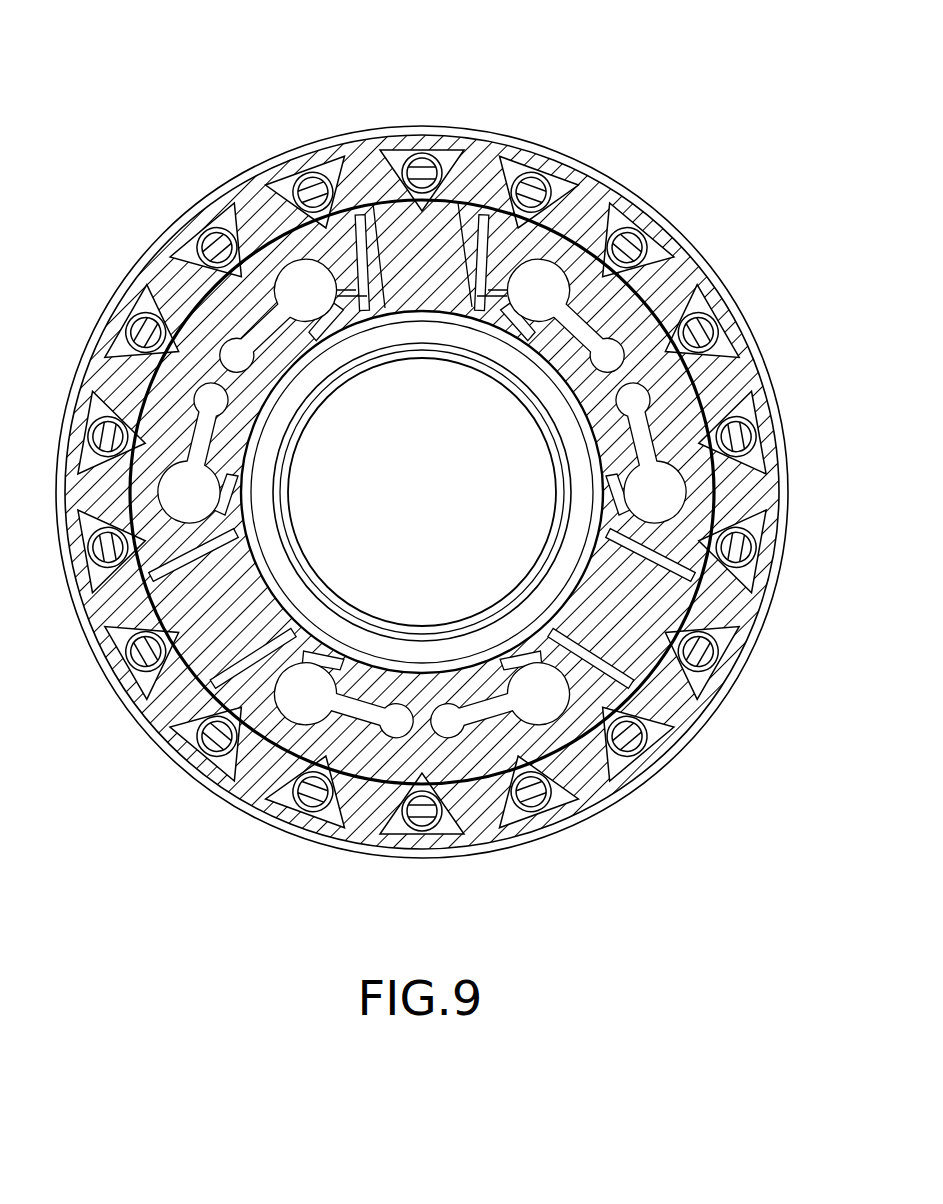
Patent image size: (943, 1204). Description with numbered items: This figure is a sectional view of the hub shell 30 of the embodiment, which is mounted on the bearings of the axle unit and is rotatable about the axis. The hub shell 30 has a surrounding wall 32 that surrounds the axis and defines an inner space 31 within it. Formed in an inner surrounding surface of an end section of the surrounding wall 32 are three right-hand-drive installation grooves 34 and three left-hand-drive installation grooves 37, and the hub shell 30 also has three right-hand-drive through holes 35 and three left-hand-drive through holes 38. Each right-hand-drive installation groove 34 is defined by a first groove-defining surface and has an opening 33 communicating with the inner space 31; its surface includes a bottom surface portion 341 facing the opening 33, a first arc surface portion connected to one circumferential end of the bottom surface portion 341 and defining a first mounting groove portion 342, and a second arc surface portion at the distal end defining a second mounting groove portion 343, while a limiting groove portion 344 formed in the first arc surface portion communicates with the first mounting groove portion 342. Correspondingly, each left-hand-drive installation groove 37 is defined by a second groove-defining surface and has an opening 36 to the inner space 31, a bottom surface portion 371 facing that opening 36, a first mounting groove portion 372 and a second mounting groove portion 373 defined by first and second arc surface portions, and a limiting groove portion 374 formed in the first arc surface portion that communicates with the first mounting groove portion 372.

The hub shell 30 is at (280, 145).
The inner space 31 is at (376, 288).
The surrounding wall 32 is at (421, 226).
The opening 33 is at (598, 405).
The right-hand-drive installation groove 34 is at (680, 478).
The bottom surface portion 341 is at (603, 445).
The first mounting groove portion 342 is at (640, 503).
The second mounting groove portion 343 is at (727, 362).
The limiting groove portion 344 is at (640, 543).
The right-hand-drive through hole 35 is at (700, 600).
The opening 36 is at (660, 292).
The left-hand-drive installation groove 37 is at (558, 268).
The bottom surface portion 371 is at (657, 268).
The first mounting groove portion 372 is at (553, 222).
The second mounting groove portion 373 is at (700, 322).
The limiting groove portion 374 is at (490, 245).
The left-hand-drive through hole 38 is at (484, 230).